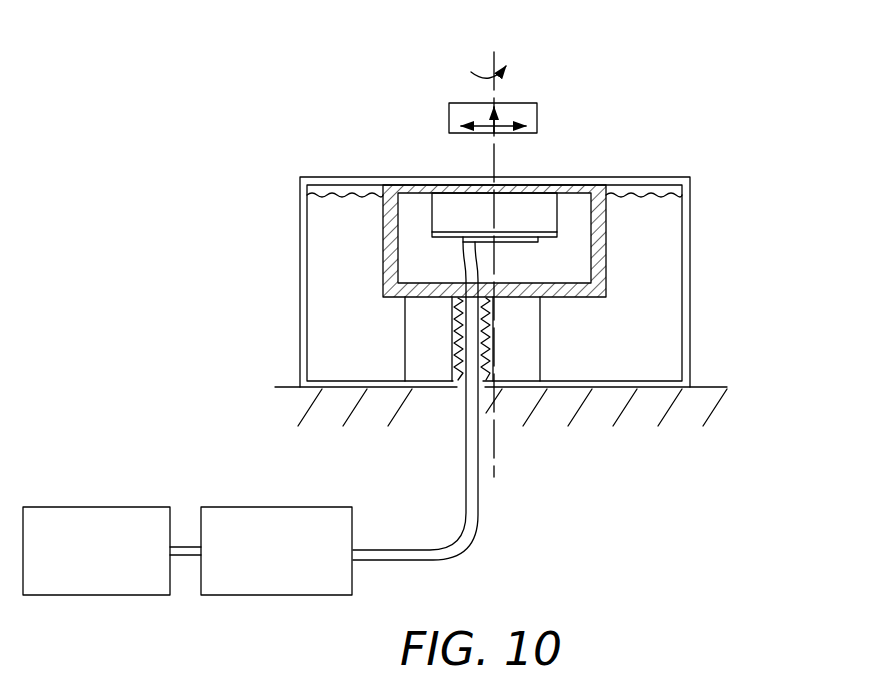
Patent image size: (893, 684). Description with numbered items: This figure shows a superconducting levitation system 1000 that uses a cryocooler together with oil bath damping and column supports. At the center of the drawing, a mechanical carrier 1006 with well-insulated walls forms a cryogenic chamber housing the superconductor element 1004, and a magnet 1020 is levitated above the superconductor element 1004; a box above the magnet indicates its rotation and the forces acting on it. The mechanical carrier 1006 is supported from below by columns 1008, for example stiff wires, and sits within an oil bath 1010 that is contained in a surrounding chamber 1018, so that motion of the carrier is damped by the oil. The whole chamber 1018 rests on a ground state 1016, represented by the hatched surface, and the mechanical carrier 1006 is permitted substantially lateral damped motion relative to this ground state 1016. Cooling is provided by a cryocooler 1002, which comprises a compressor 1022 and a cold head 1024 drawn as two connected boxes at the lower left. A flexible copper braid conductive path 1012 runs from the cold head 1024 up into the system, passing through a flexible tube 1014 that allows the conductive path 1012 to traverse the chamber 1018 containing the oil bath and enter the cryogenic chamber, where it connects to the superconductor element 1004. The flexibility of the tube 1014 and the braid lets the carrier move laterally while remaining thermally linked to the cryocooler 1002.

The system 1000 is at (411, 318).
The cryocooler 1002 is at (450, 436).
The superconductor element 1004 is at (530, 202).
The mechanical carrier 1006 is at (382, 240).
The columns 1008 is at (397, 341).
The oil bath 1010 is at (315, 312).
The conductive path 1012 is at (467, 521).
The flexible tube 1014 is at (457, 388).
The ground state 1016 is at (293, 389).
The chamber 1018 is at (300, 257).
The magnet 1020 is at (466, 134).
The compressor 1022 is at (140, 507).
The cold head 1024 is at (312, 507).